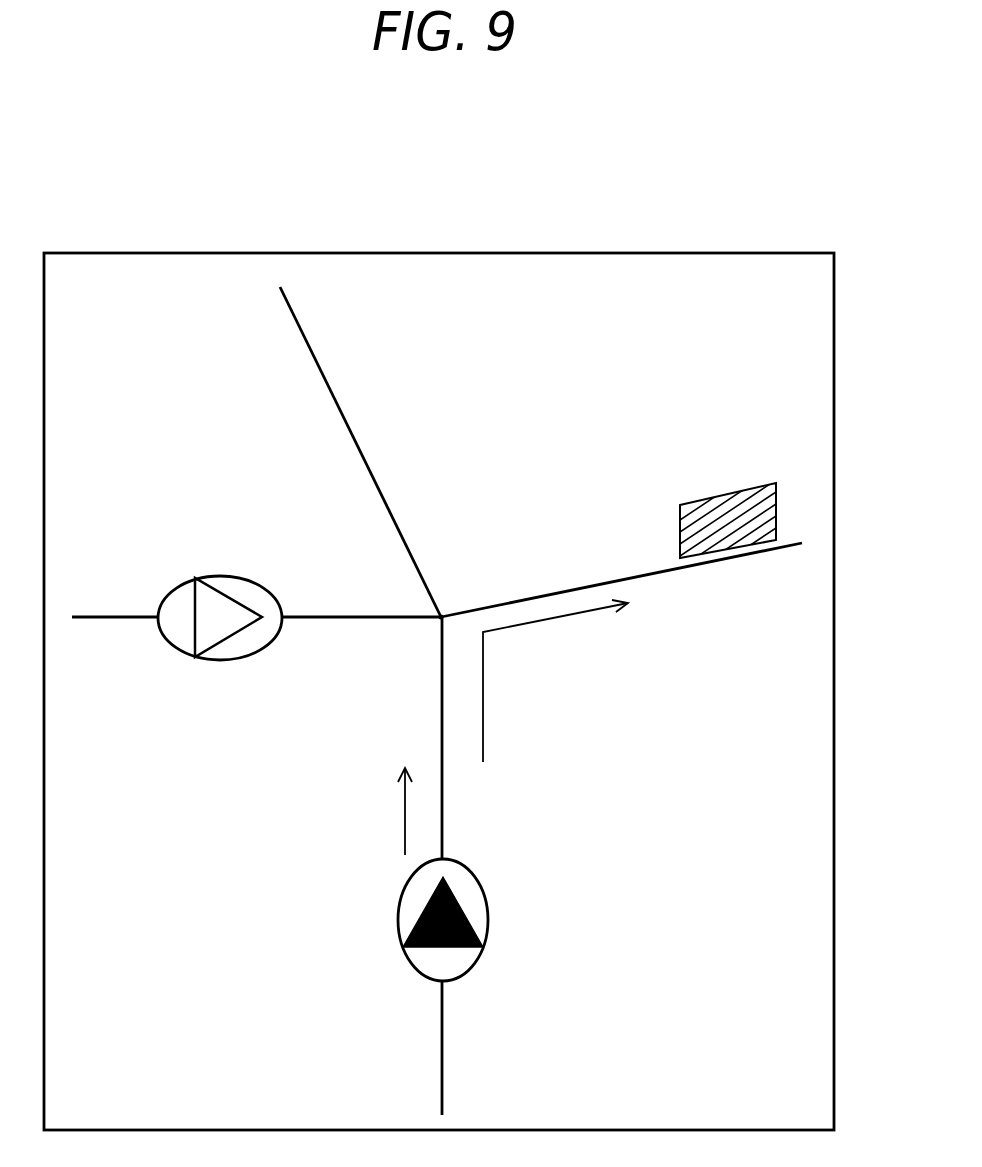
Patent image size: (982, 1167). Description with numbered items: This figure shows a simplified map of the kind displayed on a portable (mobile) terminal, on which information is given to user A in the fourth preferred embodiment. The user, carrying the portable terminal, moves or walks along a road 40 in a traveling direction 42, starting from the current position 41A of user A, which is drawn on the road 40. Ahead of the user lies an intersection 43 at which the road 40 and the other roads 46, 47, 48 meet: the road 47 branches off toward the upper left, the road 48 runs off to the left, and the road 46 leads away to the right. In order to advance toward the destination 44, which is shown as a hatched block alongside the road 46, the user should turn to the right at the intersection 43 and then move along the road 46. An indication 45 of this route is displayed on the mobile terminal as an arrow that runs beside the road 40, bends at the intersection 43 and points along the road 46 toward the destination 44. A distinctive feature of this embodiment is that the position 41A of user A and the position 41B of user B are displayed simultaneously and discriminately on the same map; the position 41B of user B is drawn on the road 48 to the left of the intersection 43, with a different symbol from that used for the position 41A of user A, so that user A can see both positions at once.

The road 40 is at (444, 1045).
The position of user A 41A is at (509, 920).
The position of user B 41B is at (241, 576).
The traveling direction 42 is at (403, 812).
The intersection 43 is at (441, 615).
The destination 44 is at (685, 503).
The indication of route 45 is at (485, 715).
The road 46 is at (679, 571).
The road 47 is at (352, 430).
The road 48 is at (328, 619).